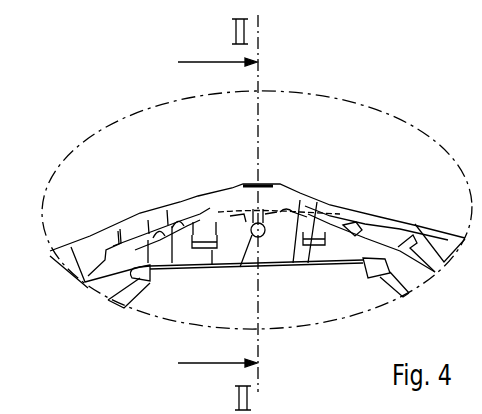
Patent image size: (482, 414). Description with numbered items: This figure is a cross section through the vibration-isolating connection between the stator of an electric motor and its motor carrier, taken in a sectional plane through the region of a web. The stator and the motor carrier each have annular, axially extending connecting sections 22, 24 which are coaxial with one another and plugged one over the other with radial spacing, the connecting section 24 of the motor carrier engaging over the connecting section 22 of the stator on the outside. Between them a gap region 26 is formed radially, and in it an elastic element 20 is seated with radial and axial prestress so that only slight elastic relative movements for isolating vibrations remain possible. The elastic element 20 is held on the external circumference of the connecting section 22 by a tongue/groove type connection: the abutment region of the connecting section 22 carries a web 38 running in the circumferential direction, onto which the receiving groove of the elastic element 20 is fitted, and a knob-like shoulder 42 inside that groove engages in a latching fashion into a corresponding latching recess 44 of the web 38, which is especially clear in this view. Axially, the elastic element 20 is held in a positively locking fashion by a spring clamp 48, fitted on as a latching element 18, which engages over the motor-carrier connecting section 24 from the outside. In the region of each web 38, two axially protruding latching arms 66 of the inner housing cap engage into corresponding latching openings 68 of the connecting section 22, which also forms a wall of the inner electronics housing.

The latching element 18 is at (269, 158).
The elastic element 20 is at (348, 240).
The connecting section 22 is at (137, 244).
The connecting section 24 is at (178, 207).
The gap region 26 is at (414, 236).
The web 38 is at (300, 200).
The knob-like shoulder 42 is at (229, 218).
The latching recess 44 is at (264, 236).
The spring clamp 48 is at (251, 182).
The latching arm 66 is at (203, 214).
The latching opening 68 is at (200, 250).